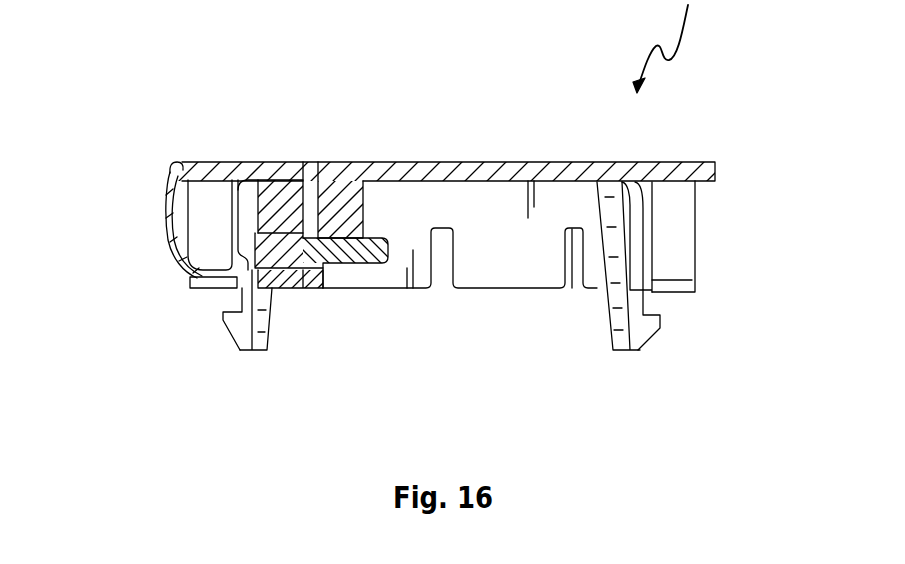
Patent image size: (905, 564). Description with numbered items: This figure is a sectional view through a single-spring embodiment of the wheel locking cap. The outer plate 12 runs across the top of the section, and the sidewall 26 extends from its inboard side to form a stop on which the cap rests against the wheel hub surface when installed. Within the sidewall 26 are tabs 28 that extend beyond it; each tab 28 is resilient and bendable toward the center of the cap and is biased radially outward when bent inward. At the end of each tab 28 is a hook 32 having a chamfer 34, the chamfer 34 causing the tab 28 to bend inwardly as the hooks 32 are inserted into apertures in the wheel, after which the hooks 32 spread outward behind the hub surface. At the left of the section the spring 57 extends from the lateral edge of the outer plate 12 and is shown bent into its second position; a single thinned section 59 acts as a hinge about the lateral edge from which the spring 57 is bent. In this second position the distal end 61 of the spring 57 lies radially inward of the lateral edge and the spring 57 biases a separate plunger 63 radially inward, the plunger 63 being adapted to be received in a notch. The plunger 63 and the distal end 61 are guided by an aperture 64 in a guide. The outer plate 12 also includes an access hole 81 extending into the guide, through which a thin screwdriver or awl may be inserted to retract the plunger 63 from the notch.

The outer plate 12 is at (475, 168).
The sidewall 26 is at (505, 273).
The tab 28 is at (270, 312).
The hook 32 is at (222, 316).
The chamfer 34 is at (229, 340).
The spring 57 is at (170, 212).
The thinned section 59 is at (176, 158).
The distal end 61 is at (283, 240).
The plunger 63 is at (373, 260).
The aperture 64 is at (302, 290).
The access hole 81 is at (312, 166).